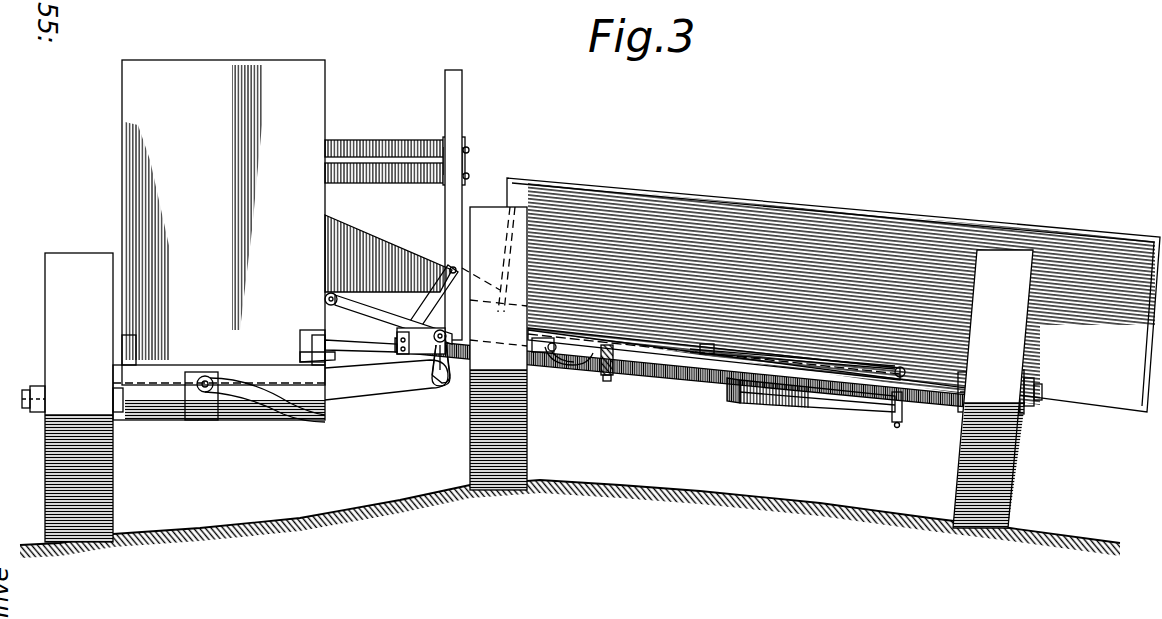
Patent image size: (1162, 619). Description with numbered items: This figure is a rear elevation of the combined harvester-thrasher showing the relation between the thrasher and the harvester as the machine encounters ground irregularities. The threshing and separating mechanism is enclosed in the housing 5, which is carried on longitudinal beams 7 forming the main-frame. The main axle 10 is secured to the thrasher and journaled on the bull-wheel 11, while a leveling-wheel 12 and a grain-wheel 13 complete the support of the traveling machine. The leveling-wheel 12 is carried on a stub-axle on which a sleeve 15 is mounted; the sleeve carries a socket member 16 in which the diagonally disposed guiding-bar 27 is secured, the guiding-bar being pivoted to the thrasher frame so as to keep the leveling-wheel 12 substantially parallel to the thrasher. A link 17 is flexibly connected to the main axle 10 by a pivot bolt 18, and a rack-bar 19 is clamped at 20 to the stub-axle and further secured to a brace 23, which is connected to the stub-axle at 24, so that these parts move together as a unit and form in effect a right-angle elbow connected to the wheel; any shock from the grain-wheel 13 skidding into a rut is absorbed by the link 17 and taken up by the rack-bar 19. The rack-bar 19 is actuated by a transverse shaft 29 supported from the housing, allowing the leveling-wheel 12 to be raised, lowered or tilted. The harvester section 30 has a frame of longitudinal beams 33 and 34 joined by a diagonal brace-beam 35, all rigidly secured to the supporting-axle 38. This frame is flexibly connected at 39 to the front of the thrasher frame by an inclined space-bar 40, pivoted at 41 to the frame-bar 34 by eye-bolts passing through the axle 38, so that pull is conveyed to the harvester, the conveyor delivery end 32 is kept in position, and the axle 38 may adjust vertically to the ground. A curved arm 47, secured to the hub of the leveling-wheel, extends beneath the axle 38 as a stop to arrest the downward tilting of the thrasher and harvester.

The housing 5 is at (223, 222).
The beams 7 is at (145, 334).
The main axle 10 is at (170, 418).
The bull-wheel 11 is at (82, 308).
The leveling-wheel 12 is at (528, 440).
The grain-wheel 13 is at (1008, 462).
The sleeve 15 is at (409, 354).
The socket member 16 is at (410, 323).
The link 17 is at (364, 411).
The pivot bolt 18 is at (202, 376).
The rack-bar 19 is at (444, 206).
The clamp 20 is at (530, 352).
The brace 23 is at (434, 298).
The brace connection 24 is at (388, 352).
The guiding-bar 27 is at (351, 352).
The transverse shaft 29 is at (362, 154).
The harvester section 30 is at (828, 212).
The delivery end 32 is at (352, 238).
The beam 33 is at (616, 382).
The beam 34 is at (903, 410).
The diagonal brace-beam 35 is at (822, 407).
The supporting-axle 38 is at (712, 365).
The flexible connection 39 is at (334, 304).
The space-bar 40 is at (676, 342).
The pivot 41 is at (810, 358).
The curved arm 47 is at (576, 368).